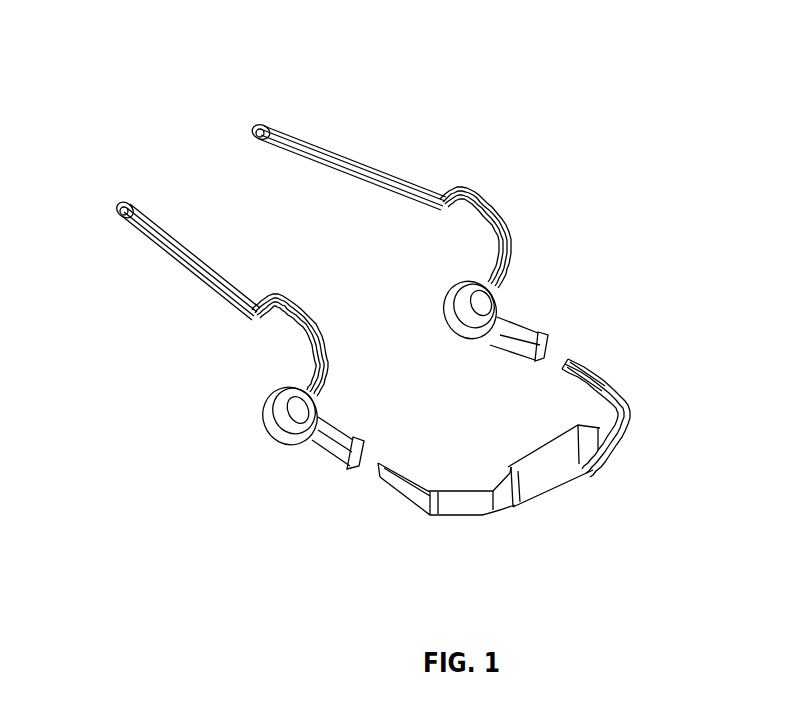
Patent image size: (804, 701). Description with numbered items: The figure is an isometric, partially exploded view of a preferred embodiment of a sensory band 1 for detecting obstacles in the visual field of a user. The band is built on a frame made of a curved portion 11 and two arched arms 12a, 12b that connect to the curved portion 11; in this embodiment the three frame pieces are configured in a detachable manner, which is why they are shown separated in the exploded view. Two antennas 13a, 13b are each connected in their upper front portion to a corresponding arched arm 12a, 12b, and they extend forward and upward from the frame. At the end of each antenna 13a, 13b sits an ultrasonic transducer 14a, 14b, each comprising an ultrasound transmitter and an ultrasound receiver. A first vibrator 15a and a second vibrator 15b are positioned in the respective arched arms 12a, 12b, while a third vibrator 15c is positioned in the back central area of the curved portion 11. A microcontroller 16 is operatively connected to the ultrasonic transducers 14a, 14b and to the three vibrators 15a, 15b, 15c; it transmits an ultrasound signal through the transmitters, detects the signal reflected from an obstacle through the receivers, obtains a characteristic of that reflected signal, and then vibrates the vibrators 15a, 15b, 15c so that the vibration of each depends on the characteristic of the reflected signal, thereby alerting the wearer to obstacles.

The sensory band 1 is at (157, 108).
The curved portion 11 is at (468, 499).
The arched arm 12a is at (322, 340).
The arched arm 12b is at (503, 241).
The antenna 13a is at (195, 264).
The antenna 13b is at (340, 163).
The ultrasonic transducer 14a is at (123, 207).
The ultrasonic transducer 14b is at (258, 131).
The first vibrator 15a is at (306, 411).
The second vibrator 15b is at (483, 309).
The third vibrator 15c is at (537, 473).
The microcontroller 16 is at (547, 462).